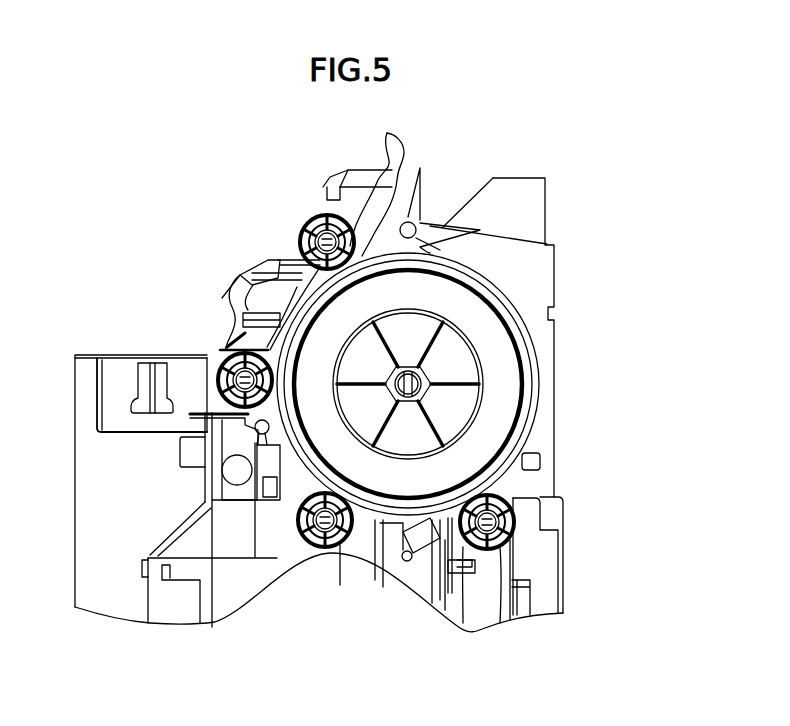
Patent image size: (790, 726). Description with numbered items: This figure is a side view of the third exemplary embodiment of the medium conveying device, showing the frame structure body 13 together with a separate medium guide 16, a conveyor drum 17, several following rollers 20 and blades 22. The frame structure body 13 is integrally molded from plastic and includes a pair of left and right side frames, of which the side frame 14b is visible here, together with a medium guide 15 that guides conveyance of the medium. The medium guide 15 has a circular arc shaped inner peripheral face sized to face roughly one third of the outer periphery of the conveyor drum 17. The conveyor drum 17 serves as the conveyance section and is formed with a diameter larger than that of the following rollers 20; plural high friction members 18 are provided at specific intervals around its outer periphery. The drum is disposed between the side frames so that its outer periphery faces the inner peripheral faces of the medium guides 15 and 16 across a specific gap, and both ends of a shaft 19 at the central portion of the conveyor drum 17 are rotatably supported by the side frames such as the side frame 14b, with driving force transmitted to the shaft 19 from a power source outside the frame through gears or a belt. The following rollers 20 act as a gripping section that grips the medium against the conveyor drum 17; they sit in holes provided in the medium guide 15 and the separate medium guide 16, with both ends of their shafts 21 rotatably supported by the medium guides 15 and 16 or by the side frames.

The frame structure body 13 is at (617, 178).
The side frame 14b is at (544, 262).
The medium guide 15 is at (565, 512).
The separate medium guide 16 is at (403, 145).
The conveyor drum 17 is at (505, 300).
The high friction members 18 is at (536, 343).
The shaft 19 is at (427, 392).
The following rollers 20 is at (323, 214).
The shafts 21 is at (317, 236).
The blades 22 is at (420, 183).